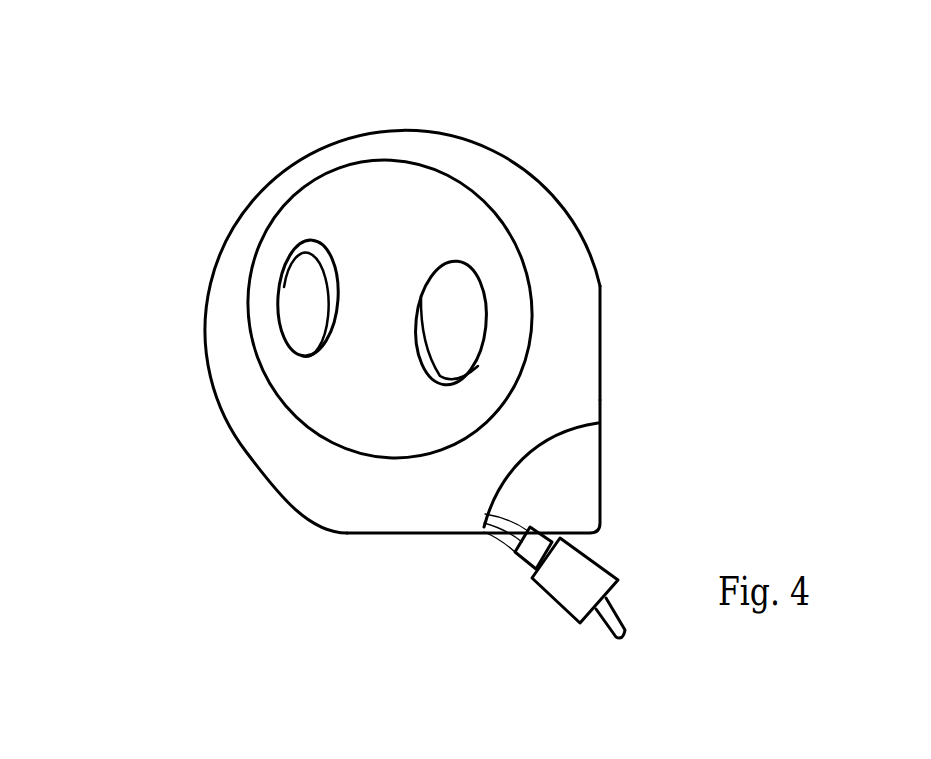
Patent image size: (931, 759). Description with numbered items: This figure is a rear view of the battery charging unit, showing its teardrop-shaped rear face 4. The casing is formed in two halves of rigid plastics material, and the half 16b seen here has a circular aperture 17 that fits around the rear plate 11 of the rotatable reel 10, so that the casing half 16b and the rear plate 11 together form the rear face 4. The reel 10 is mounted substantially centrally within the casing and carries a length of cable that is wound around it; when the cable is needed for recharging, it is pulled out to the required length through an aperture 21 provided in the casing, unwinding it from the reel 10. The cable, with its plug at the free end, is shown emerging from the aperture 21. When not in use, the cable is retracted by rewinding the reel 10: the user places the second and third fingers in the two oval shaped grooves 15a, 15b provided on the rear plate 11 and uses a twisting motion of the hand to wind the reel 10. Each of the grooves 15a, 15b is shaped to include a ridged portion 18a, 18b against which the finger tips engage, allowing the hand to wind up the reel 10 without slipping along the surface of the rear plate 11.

The rotatable reel 10 is at (367, 225).
The rear plate 11 is at (423, 207).
The circular aperture 17 is at (502, 228).
The casing half 16b is at (568, 272).
The rear face 4 is at (567, 407).
The aperture 21 is at (532, 453).
The ridged portion 18a is at (305, 247).
The oval shaped groove 15a is at (299, 308).
The ridged portion 18b is at (452, 372).
The oval shaped groove 15b is at (455, 337).